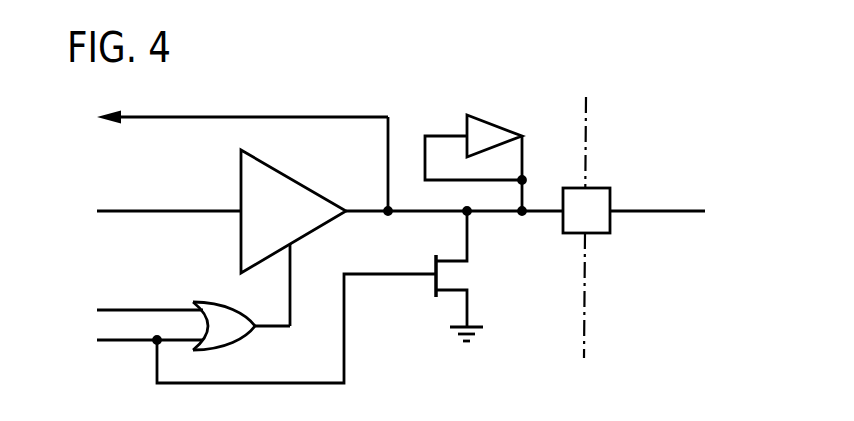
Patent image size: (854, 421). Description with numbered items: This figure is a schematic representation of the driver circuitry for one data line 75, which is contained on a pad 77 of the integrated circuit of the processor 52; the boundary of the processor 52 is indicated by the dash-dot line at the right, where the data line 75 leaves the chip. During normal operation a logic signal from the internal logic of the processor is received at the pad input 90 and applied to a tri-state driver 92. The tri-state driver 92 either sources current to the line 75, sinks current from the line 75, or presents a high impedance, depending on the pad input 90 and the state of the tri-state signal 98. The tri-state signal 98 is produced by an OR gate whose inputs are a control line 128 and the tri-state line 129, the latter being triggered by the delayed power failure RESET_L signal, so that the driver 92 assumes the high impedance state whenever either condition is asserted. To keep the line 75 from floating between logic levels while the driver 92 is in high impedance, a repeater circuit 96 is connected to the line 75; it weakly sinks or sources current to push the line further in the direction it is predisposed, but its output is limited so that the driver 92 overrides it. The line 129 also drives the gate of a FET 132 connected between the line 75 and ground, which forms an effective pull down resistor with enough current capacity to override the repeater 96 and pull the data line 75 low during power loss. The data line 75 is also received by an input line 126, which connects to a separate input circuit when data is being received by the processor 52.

The input line 126 is at (192, 117).
The pad input 90 is at (120, 211).
The tri-state driver 92 is at (292, 179).
The tri-state signal 98 is at (291, 286).
The control input line 128 is at (128, 308).
The tri-state line 129 is at (112, 345).
The FET 132 is at (490, 266).
The pad 77 is at (499, 310).
The repeater circuit 96 is at (483, 116).
The processor 52 is at (606, 126).
The data line 75 is at (636, 210).